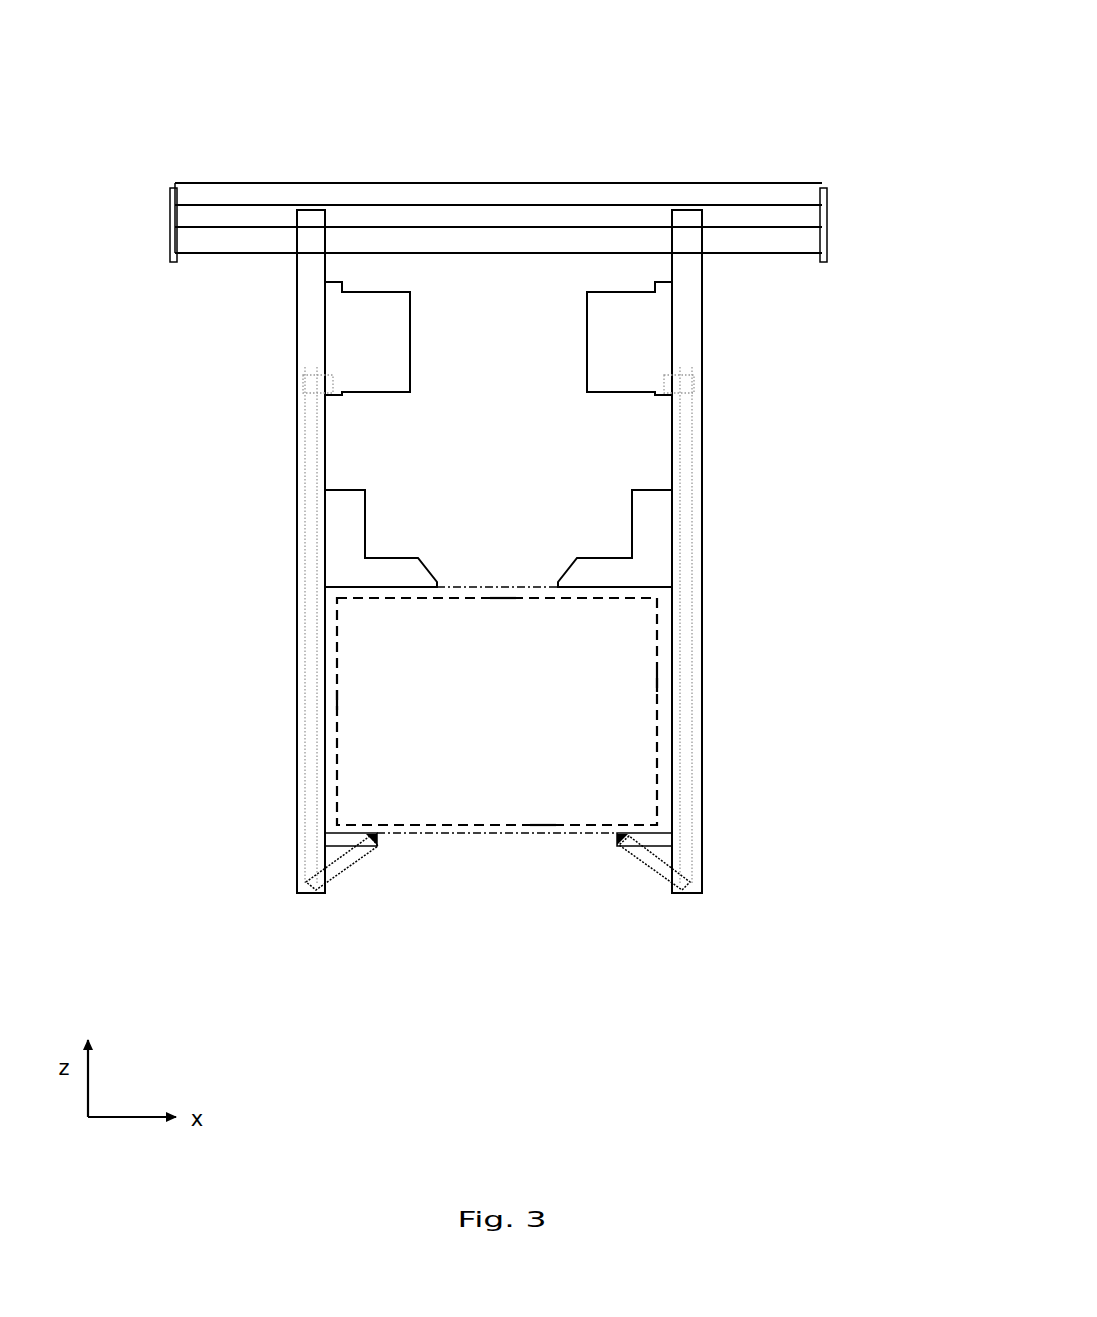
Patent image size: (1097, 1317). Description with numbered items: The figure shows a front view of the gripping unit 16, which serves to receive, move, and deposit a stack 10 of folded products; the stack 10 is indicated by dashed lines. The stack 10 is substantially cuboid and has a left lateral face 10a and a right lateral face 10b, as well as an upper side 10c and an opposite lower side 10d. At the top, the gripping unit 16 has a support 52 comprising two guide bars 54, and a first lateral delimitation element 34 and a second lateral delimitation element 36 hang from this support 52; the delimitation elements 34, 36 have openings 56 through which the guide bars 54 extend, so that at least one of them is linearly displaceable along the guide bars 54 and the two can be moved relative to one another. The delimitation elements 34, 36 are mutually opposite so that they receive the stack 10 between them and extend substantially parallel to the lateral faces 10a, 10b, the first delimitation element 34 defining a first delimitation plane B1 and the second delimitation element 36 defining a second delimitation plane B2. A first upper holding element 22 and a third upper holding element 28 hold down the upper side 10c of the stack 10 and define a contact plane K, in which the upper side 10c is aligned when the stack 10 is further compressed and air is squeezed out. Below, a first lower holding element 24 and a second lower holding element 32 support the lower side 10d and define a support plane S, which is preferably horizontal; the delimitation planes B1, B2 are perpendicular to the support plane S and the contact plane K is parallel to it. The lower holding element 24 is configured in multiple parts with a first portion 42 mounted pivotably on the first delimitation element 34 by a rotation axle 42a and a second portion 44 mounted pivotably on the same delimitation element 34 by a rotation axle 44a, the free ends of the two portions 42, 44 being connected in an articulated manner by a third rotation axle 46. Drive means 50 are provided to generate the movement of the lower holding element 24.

The gripping unit 16 is at (664, 96).
The support 52 is at (508, 195).
The guide bars 54 is at (797, 240).
The openings 56 is at (303, 240).
The drive means 50 is at (310, 348).
The first lateral delimitation element 34 is at (308, 625).
The second lateral delimitation element 36 is at (692, 758).
The first delimitation plane B1 is at (325, 753).
The second delimitation plane B2 is at (673, 798).
The first upper holding element 22 is at (342, 535).
The third upper holding element 28 is at (650, 533).
The contact plane K is at (452, 585).
The support plane S is at (477, 835).
The stack 10 is at (637, 648).
The left lateral face 10a is at (340, 700).
The right lateral face 10b is at (658, 683).
The upper side 10c is at (503, 598).
The lower side 10d is at (542, 835).
The first lower holding element 24 is at (357, 888).
The first portion 42 is at (334, 847).
The rotation axle 42a is at (317, 840).
The second portion 44 is at (343, 858).
The rotation axle 44a is at (313, 878).
The third rotation axle 46 is at (372, 845).
The second lower holding element 32 is at (651, 885).